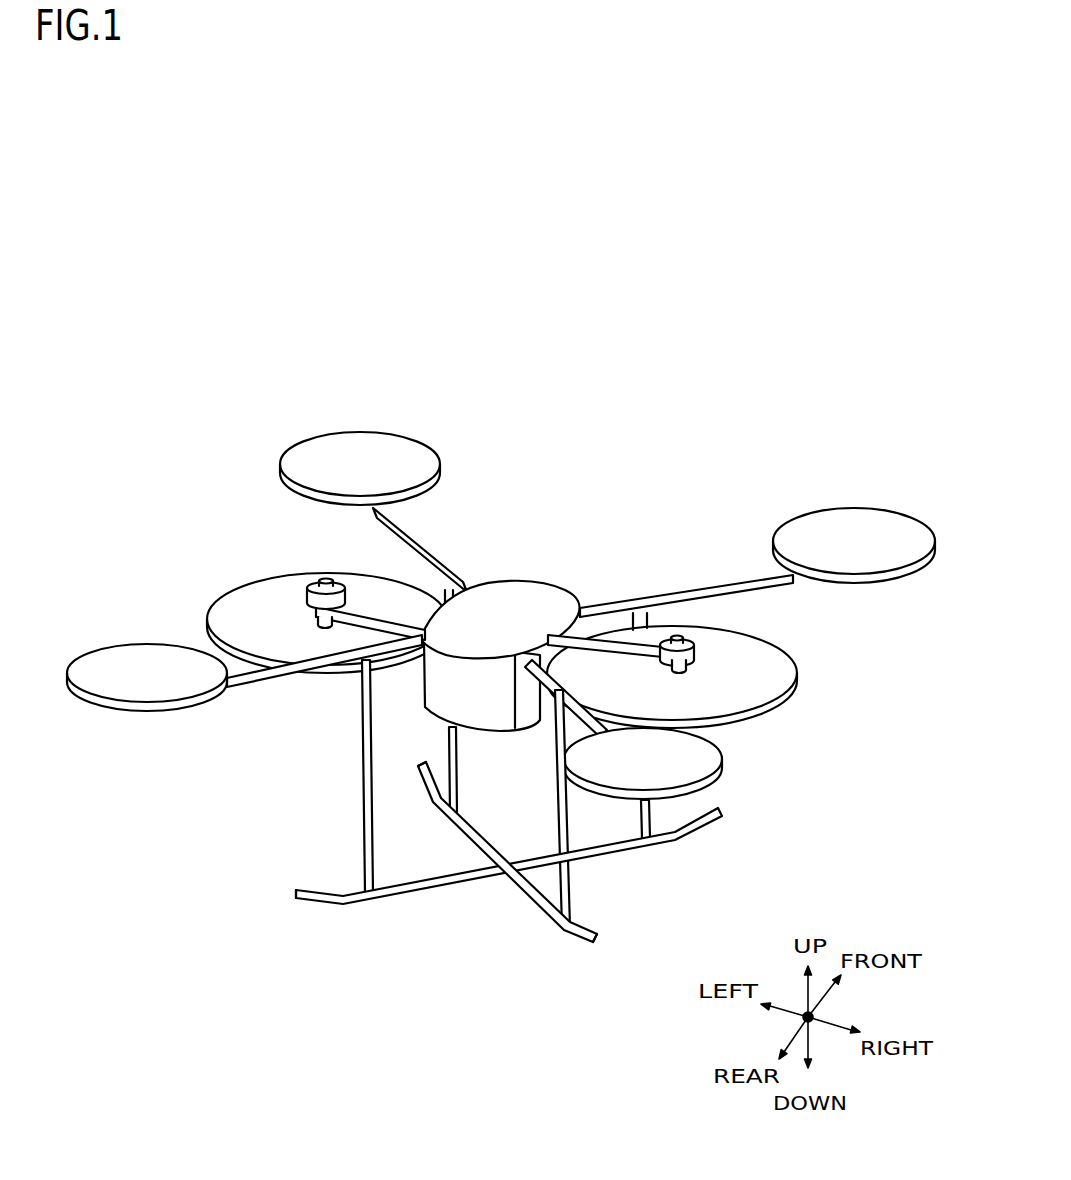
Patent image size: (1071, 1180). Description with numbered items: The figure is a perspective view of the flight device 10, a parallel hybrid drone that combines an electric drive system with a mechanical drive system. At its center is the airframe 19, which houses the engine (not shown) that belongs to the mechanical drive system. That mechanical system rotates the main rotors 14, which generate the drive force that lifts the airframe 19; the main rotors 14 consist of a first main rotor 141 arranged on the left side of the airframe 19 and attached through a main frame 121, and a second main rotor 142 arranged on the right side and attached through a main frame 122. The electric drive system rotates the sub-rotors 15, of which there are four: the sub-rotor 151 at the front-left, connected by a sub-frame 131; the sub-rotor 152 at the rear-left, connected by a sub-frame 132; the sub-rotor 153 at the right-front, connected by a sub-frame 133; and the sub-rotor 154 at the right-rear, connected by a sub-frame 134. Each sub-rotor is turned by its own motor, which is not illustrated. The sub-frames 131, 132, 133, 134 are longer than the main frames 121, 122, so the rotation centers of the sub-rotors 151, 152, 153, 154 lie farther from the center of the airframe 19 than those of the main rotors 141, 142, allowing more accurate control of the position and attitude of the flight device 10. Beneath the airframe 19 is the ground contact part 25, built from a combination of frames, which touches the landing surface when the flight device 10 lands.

The flight device 10 is at (593, 285).
The main rotors 14 is at (851, 643).
The sub-rotors 15 is at (697, 483).
The airframe 19 is at (552, 588).
The ground contact part 25 is at (402, 897).
The main frame 121 is at (368, 603).
The main frame 122 is at (622, 642).
The sub-frame 131 is at (433, 545).
The sub-frame 132 is at (240, 688).
The sub-frame 133 is at (722, 582).
The sub-frame 134 is at (568, 705).
The main rotor 141 is at (240, 587).
The main rotor 142 is at (798, 680).
The sub-rotor 151 is at (358, 430).
The sub-rotor 152 is at (142, 718).
The sub-rotor 153 is at (868, 507).
The sub-rotor 154 is at (673, 802).